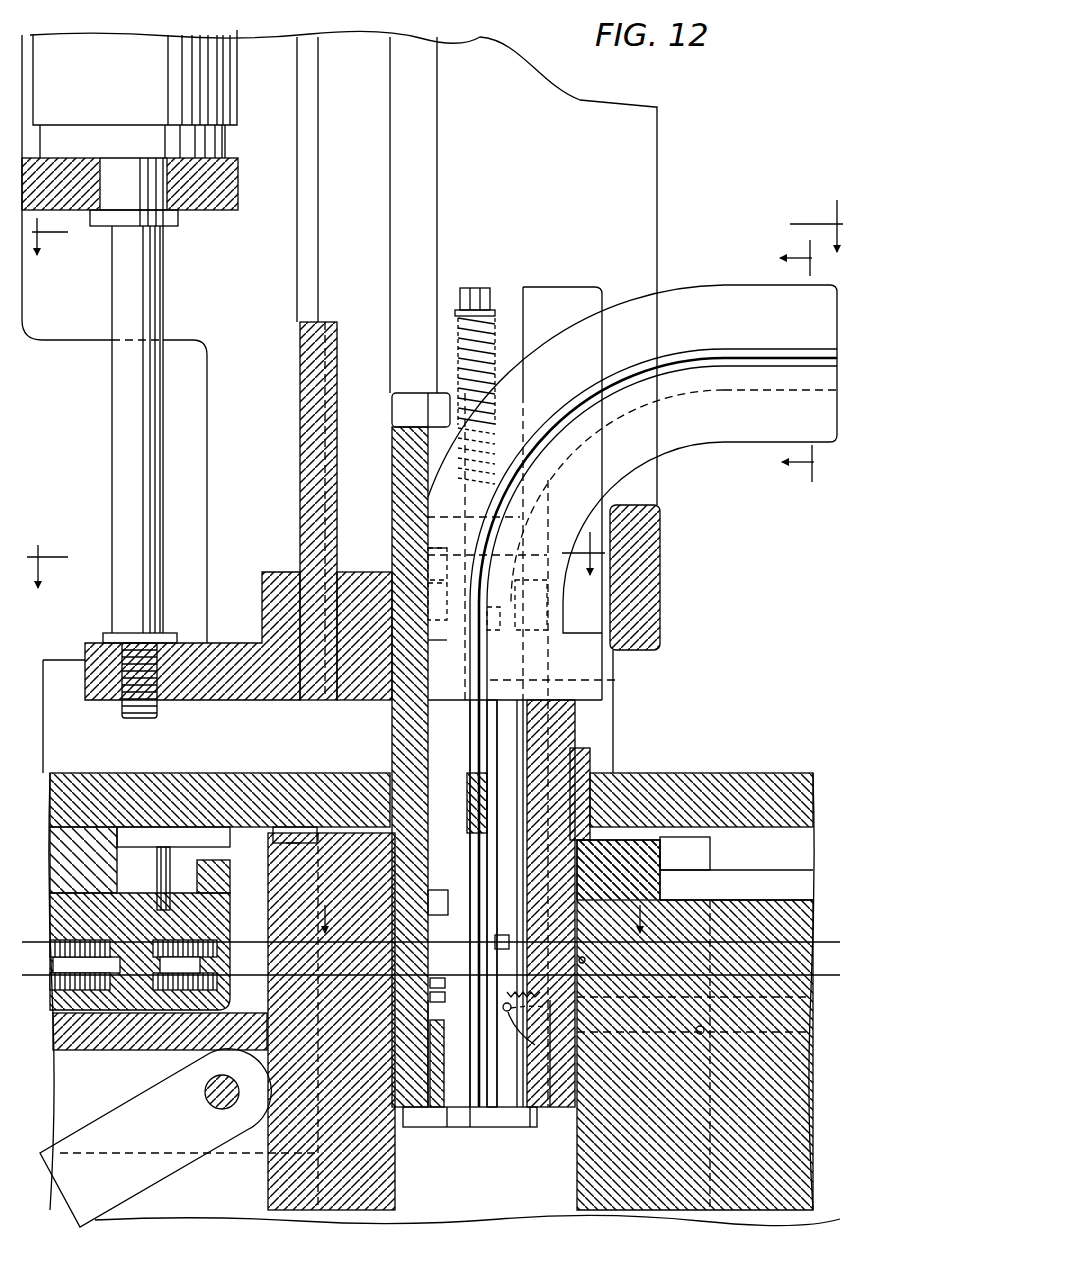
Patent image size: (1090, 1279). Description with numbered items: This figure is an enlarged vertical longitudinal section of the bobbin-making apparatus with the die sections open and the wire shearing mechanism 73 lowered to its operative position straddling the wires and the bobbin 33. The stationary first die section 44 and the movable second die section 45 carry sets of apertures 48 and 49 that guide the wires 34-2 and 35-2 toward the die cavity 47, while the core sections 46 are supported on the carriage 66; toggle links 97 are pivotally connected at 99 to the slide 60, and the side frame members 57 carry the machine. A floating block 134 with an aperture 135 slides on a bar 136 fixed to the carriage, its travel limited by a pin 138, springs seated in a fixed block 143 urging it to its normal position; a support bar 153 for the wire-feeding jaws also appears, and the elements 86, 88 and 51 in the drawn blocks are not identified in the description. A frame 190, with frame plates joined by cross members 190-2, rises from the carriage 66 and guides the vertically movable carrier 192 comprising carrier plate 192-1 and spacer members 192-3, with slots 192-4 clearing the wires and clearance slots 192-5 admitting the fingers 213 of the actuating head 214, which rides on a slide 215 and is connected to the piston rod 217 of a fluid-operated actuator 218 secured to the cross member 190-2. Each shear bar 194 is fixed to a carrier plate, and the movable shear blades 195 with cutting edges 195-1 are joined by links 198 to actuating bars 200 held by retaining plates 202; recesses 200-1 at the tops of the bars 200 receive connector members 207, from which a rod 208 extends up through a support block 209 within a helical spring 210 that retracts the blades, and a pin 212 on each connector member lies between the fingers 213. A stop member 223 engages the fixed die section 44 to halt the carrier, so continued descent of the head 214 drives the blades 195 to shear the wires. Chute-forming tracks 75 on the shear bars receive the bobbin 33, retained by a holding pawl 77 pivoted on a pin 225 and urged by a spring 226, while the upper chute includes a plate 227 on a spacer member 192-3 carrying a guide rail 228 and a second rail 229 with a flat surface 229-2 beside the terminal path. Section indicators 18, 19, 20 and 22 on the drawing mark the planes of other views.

The frame 190 is at (645, 168).
The fluid-operated actuator 218 is at (128, 58).
The cross members 190-2 is at (207, 195).
The piston rod 217 is at (125, 441).
The slide 215 is at (310, 477).
The actuating head 214 is at (225, 690).
The spacer members 192-3 is at (396, 412).
The support block 209 is at (434, 412).
The helical spring 210 is at (460, 336).
The rod 208 is at (460, 358).
The clearance slots 192-5 is at (400, 512).
The carrier 192 is at (575, 720).
The plate 227 is at (688, 302).
The guide rail 228 is at (728, 357).
The second rail 229 is at (718, 443).
The flat surface 229-2 is at (772, 392).
The actuating bars 200 is at (416, 660).
The connector members 207 is at (400, 550).
The fingers 213 is at (400, 567).
The pin 212 is at (416, 641).
The recesses 200-1 is at (590, 679).
The section line 19- 19 is at (316, 574).
The section line 18- 18 is at (437, 224).
The section line 20- 20 is at (783, 361).
The section line 22- 22 is at (482, 915).
The stop member 223 is at (579, 802).
The carriage 66 is at (110, 792).
The fixed block 143 is at (62, 850).
The bar 136 is at (122, 876).
The floating block 134 is at (140, 837).
The aperture 135 is at (205, 868).
The pin 138 is at (168, 847).
The spring 86 is at (47, 965).
The spring 88 is at (153, 970).
The slide 60 is at (98, 1040).
The second die section 45 is at (380, 1167).
The apertures 49 is at (312, 880).
The wires 35-2 is at (298, 975).
The carrier plate 192-1 is at (328, 835).
The stationary first die section 44 is at (600, 1183).
The shear bar 194 is at (510, 890).
The support bar 153 is at (742, 876).
The wires 34-2 is at (760, 1000).
The apertures 48 is at (757, 940).
The passage 51 is at (698, 1036).
The die cavity 47 is at (385, 962).
The chute-forming tracks 75 is at (465, 768).
The retaining plates 202 is at (440, 815).
The links 198 is at (420, 905).
The cutting edge 195-1 is at (430, 984).
The shear blades 195 is at (432, 998).
The bobbin 33 is at (502, 936).
The spring 226 is at (547, 1008).
The pin 225 is at (535, 1045).
The core sections 46 is at (490, 1110).
The wire shearing mechanism 73 is at (480, 1100).
The holding pawl 77 is at (470, 1040).
The slots 192-4 is at (420, 1060).
The toggle links 97 is at (150, 1165).
The pivot 99 is at (228, 1112).
The side frame members 57 is at (138, 1207).